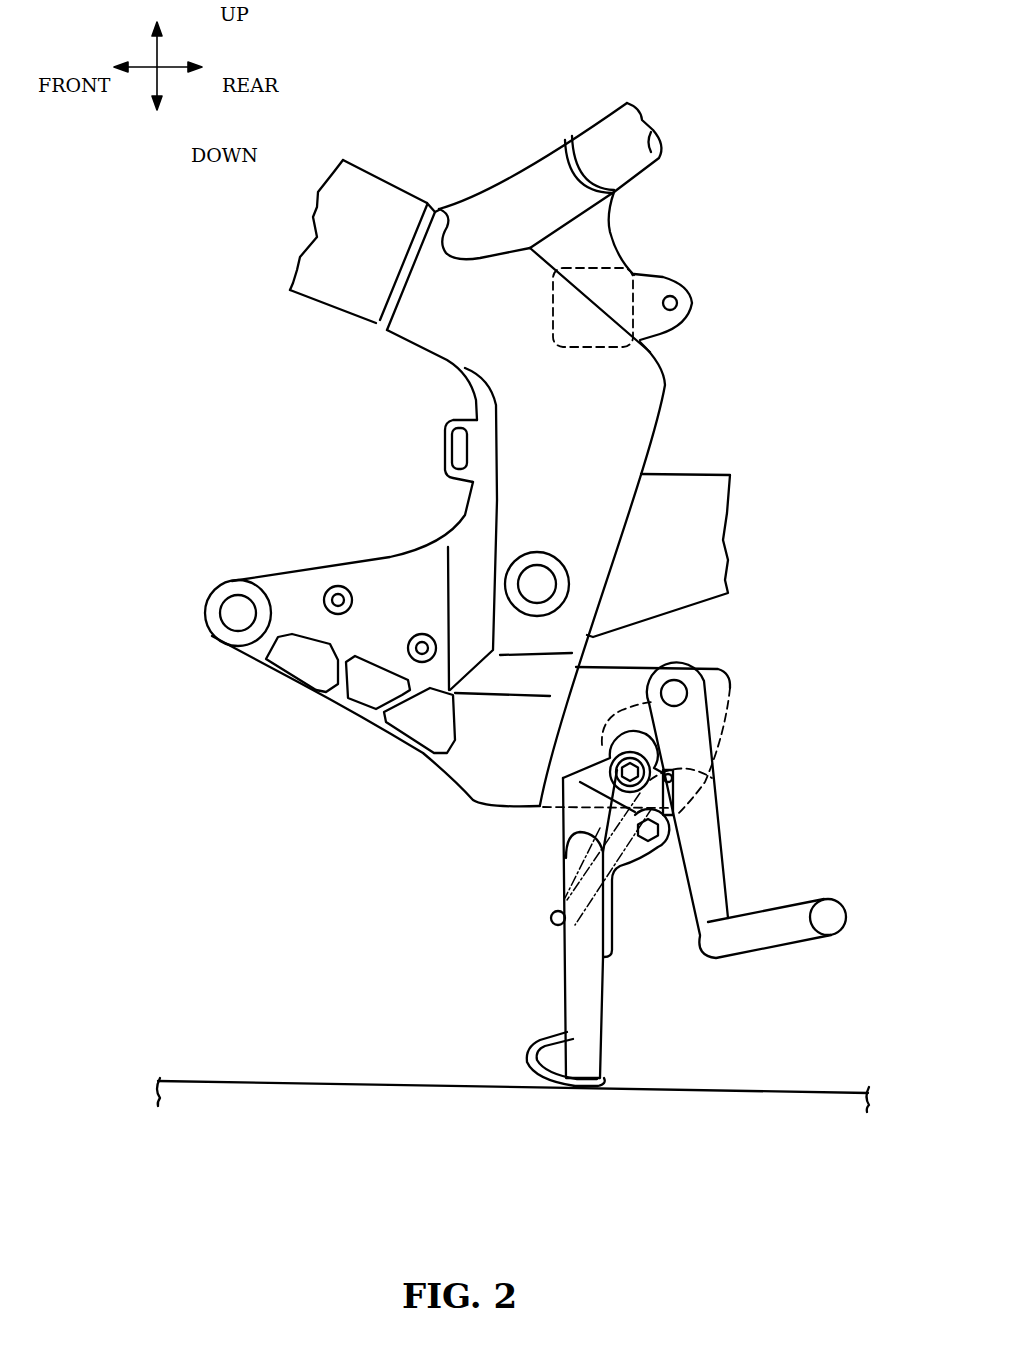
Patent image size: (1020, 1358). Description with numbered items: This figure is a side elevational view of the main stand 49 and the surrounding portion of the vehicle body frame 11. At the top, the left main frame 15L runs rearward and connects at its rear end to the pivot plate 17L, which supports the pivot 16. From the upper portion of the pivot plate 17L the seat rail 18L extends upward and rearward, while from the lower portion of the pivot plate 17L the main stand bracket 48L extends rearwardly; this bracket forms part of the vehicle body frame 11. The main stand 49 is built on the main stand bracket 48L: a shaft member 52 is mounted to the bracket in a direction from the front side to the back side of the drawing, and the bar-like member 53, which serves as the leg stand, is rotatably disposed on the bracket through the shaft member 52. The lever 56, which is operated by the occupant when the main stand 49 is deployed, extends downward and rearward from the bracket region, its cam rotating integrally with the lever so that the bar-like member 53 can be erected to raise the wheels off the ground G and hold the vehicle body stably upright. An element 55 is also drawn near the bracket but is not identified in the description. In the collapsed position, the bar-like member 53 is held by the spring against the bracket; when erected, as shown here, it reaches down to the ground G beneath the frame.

The vehicle body frame 11 is at (789, 241).
The main frame 15L is at (373, 197).
The pivot 16 is at (537, 583).
The pivot plate 17L is at (642, 393).
The seat rail 18L is at (627, 165).
The main stand bracket 48L is at (715, 683).
The main stand 49 is at (540, 867).
The shaft member 52 is at (627, 765).
The bar-like member 53 is at (573, 960).
The step arm 55 is at (677, 687).
The lever 56 is at (703, 878).
The ground G is at (258, 1078).